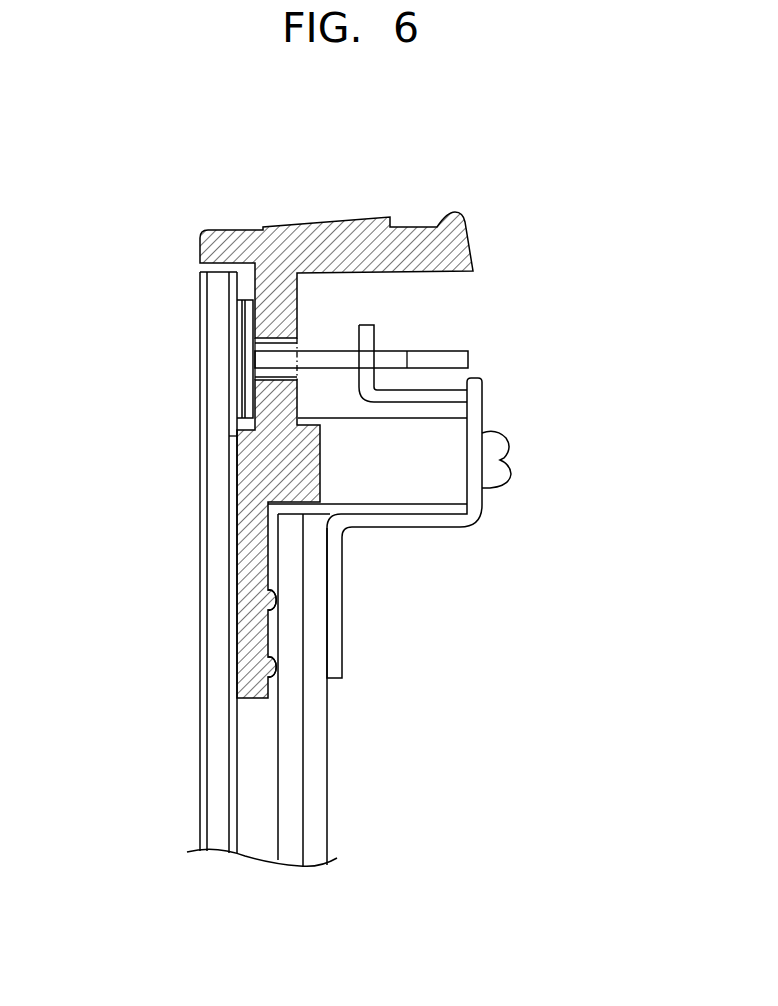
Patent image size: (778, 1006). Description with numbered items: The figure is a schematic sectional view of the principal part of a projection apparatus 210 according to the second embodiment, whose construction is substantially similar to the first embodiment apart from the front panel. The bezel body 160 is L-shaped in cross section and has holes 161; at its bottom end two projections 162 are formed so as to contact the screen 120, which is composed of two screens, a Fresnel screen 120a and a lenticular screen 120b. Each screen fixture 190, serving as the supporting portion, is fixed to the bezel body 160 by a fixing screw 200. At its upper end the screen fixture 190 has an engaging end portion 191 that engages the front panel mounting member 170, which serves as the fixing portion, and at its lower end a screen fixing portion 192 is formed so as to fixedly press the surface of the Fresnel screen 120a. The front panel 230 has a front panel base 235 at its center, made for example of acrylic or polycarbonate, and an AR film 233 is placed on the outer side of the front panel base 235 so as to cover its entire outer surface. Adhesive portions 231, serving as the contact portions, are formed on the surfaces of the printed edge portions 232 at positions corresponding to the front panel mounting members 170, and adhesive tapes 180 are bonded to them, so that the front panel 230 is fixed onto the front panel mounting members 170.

The projection apparatus 210 is at (514, 217).
The bezel body 160 is at (362, 238).
The holes 161 is at (296, 344).
The projections 162 is at (267, 695).
The printed edge portions 232 is at (255, 273).
The front panel mounting members 170 is at (457, 360).
The engaging end portion 191 is at (372, 332).
The screen fixture 190 is at (474, 507).
The screen fixing portion 192 is at (344, 598).
The fixing screw 200 is at (510, 438).
The front panel 230 is at (182, 287).
The adhesive portions 231 is at (233, 371).
The AR film 233 is at (233, 483).
The front panel base 235 is at (217, 592).
The adhesive tape 180 is at (245, 327).
The screen 120 is at (462, 706).
The Fresnel screen 120a is at (318, 785).
The lenticular screen 120b is at (295, 720).